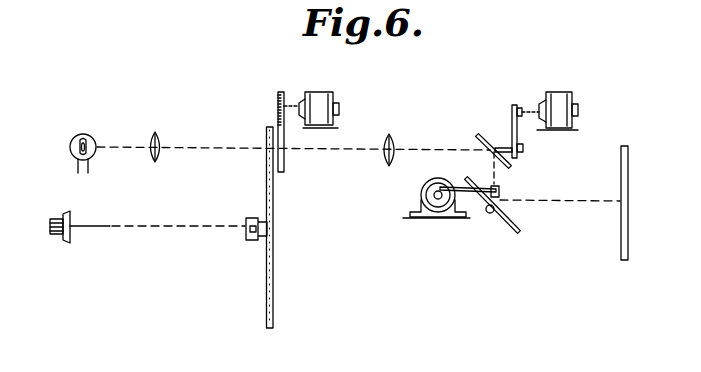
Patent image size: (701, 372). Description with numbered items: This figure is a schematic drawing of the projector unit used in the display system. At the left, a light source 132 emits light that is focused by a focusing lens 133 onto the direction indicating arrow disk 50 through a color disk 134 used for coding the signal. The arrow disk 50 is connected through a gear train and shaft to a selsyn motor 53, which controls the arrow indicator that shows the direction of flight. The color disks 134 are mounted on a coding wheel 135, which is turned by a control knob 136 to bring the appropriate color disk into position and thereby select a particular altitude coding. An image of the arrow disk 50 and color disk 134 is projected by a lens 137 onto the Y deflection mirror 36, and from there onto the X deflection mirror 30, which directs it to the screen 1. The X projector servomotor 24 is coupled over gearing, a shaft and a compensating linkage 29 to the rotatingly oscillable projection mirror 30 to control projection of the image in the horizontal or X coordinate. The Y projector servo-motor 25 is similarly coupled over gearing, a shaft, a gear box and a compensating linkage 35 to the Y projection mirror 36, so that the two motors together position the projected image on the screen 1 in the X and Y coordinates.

The screen 1 is at (628, 172).
The X projector servomotor 24 is at (421, 194).
The Y projector servo-motor 25 is at (556, 98).
The compensating linkage 29 is at (499, 194).
The X projection mirror 30 is at (520, 231).
The compensating linkage 35 is at (518, 146).
The Y projection mirror 36 is at (486, 134).
The direction indicating disk 50 is at (285, 170).
The selsyn motor 53 is at (318, 96).
The light source 132 is at (93, 128).
The focusing lens 133 is at (157, 133).
The color disk 134 is at (267, 151).
The coding wheel 135 is at (274, 273).
The control knob 136 is at (60, 238).
The projection lens 137 is at (392, 134).